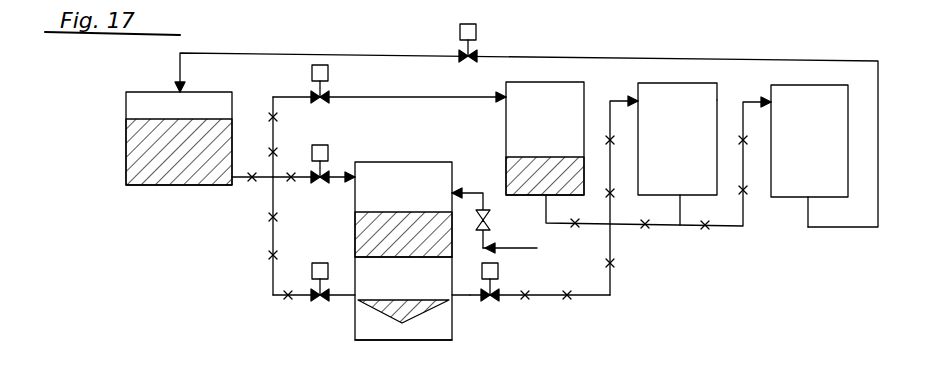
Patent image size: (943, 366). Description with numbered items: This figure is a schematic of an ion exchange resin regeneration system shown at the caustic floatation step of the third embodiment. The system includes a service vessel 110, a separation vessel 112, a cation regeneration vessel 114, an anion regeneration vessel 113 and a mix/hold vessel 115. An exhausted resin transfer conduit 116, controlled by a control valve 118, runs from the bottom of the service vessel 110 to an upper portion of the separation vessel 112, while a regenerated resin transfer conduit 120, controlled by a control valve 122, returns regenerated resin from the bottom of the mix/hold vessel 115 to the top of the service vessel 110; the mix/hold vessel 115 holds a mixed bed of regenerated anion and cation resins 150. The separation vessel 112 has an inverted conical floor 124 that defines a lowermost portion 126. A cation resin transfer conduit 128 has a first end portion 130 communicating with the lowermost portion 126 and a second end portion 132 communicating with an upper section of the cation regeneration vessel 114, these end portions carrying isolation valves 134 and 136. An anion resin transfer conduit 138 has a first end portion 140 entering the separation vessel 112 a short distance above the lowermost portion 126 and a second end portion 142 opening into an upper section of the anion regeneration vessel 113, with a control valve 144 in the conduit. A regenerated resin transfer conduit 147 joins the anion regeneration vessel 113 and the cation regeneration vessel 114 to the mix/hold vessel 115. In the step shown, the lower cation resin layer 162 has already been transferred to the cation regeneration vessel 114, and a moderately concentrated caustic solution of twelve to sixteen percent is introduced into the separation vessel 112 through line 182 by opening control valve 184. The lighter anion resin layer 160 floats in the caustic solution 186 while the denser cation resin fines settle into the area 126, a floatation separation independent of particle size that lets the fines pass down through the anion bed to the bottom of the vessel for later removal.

The service vessel 110 is at (126, 112).
The mixed bed of regenerated anion and cation resins 150 is at (135, 160).
The exhausted resin transfer conduit 116 is at (258, 180).
The separation vessel 112 is at (345, 184).
The control valve 118 is at (327, 168).
The cation resin transfer conduit 128 is at (273, 243).
The second end portion 132 is at (470, 95).
The control or isolation valve 136 is at (327, 93).
The regenerated resin transfer conduit 120 is at (602, 58).
The control valve 122 is at (476, 52).
The upper anion resin layer 160 is at (375, 251).
The first end portion 130 is at (405, 300).
The lowermost portion 126 is at (402, 321).
The inverted conical floor 124 is at (422, 323).
The lower cation resin layer 162 is at (506, 168).
The control or isolation valve 134 is at (312, 300).
The caustic solution 186 is at (445, 298).
The first end portion 140 is at (468, 297).
The control valve 144 is at (497, 292).
The cation regeneration vessel 114 is at (585, 94).
The control valve 184 is at (487, 222).
The line 182 is at (537, 249).
The anion resin transfer conduit 138 is at (612, 247).
The second end portion 142 is at (622, 100).
The regenerated resin transfer conduit 147 is at (688, 228).
The anion regeneration vessel 113 is at (718, 100).
The mix/hold vessel 115 is at (848, 105).